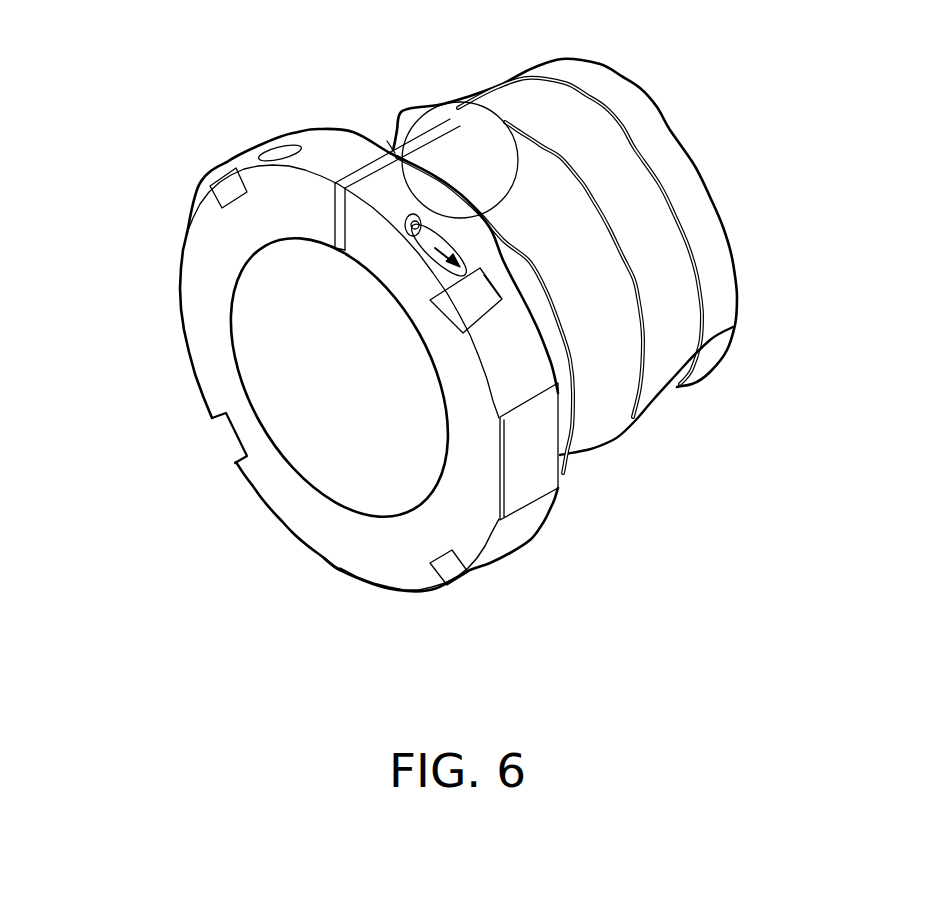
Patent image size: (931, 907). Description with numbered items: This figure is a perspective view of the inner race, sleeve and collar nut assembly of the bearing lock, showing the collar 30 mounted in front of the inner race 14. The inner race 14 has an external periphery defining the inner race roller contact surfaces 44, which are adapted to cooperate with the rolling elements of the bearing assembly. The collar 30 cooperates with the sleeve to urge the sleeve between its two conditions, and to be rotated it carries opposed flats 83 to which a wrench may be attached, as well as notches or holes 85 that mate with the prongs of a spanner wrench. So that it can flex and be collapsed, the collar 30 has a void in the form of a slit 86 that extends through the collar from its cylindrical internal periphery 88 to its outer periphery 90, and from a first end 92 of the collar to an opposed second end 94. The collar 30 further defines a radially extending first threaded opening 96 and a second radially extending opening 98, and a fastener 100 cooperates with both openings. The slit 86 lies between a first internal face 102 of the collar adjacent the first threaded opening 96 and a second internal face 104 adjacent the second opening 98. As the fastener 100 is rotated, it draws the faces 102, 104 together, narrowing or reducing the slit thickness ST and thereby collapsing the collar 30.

The inner race 14 is at (640, 90).
The collar 30 is at (185, 181).
The inner race roller contact surfaces 44 is at (660, 260).
The opposed flats 83 is at (537, 478).
The notches or holes 85 is at (215, 447).
The void 86 is at (379, 130).
The cylindrical internal periphery 88 is at (334, 431).
The outer periphery 90 is at (190, 378).
The first end 92 is at (394, 548).
The second end 94 is at (545, 528).
The first threaded opening 96 is at (251, 146).
The second opening 98 is at (483, 277).
The fastener 100 is at (505, 120).
The first internal face 102 is at (363, 172).
The second internal face 104 is at (347, 237).
The slit thickness ST is at (490, 150).